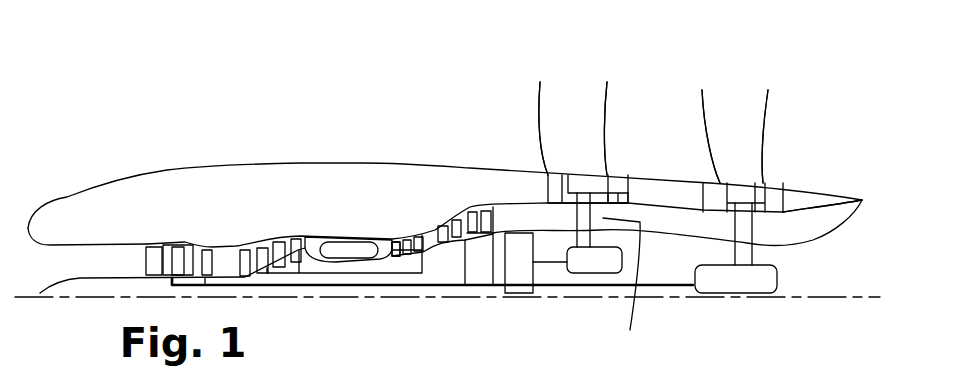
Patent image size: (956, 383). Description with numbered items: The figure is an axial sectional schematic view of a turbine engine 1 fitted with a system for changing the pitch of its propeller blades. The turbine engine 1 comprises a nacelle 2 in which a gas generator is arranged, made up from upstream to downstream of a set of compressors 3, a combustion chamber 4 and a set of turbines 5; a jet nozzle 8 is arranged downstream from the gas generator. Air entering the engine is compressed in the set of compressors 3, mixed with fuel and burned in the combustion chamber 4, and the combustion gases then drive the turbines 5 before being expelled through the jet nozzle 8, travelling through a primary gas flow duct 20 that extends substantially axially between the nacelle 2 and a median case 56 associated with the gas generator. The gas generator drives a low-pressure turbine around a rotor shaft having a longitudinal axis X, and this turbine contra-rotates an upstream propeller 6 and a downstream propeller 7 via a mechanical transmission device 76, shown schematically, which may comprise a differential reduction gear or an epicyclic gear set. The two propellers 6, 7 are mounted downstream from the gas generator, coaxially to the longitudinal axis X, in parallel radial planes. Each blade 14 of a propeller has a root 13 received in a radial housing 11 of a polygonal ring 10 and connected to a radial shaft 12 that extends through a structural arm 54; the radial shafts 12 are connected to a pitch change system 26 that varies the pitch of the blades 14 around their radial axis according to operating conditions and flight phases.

The turbine engine 1 is at (140, 132).
The nacelle 2 is at (300, 182).
The set of compressors 3 is at (192, 220).
The combustion chamber 4 is at (344, 247).
The set of turbines 5 is at (450, 206).
The median case 56 is at (399, 215).
The radial shaft 12 is at (580, 215).
The polygonal ring 10 is at (556, 190).
The root 13 is at (588, 184).
The radial housing 11 is at (605, 196).
The blade 14 is at (551, 98).
The upstream propeller 6 is at (590, 65).
The downstream propeller 7 is at (738, 82).
The jet nozzle 8 is at (860, 237).
The primary gas flow duct 20 is at (700, 220).
The mechanical transmission device 76 is at (517, 270).
The pitch change system 26 is at (580, 263).
The structural arm 54 is at (623, 289).
The longitudinal axis X is at (97, 298).